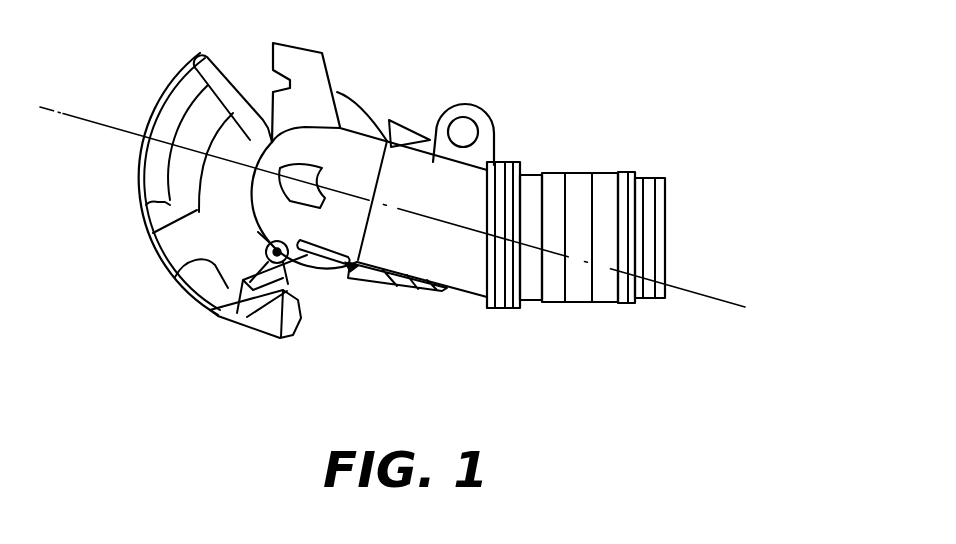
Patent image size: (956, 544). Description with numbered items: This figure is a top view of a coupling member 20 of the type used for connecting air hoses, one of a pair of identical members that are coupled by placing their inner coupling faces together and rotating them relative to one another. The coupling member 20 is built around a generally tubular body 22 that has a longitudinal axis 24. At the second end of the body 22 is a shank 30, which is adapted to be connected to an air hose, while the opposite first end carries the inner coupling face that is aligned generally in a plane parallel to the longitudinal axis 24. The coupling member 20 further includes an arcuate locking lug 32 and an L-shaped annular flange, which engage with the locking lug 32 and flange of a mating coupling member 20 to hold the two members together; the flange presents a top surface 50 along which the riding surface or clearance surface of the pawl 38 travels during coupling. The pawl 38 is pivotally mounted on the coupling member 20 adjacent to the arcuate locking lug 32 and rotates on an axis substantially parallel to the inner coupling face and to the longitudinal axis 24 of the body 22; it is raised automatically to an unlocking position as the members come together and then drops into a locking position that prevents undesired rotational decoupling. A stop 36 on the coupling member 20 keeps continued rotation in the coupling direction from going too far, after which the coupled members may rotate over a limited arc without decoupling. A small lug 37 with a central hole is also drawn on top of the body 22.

The coupling member 20 is at (523, 125).
The body 22 is at (467, 253).
The longitudinal axis 24 is at (712, 295).
The shank 30 is at (645, 243).
The arcuate locking lug 32 is at (267, 330).
The stop 36 is at (308, 62).
The mounting lug 37 is at (448, 103).
The pawl 38 is at (200, 328).
The top surface 50 is at (180, 252).